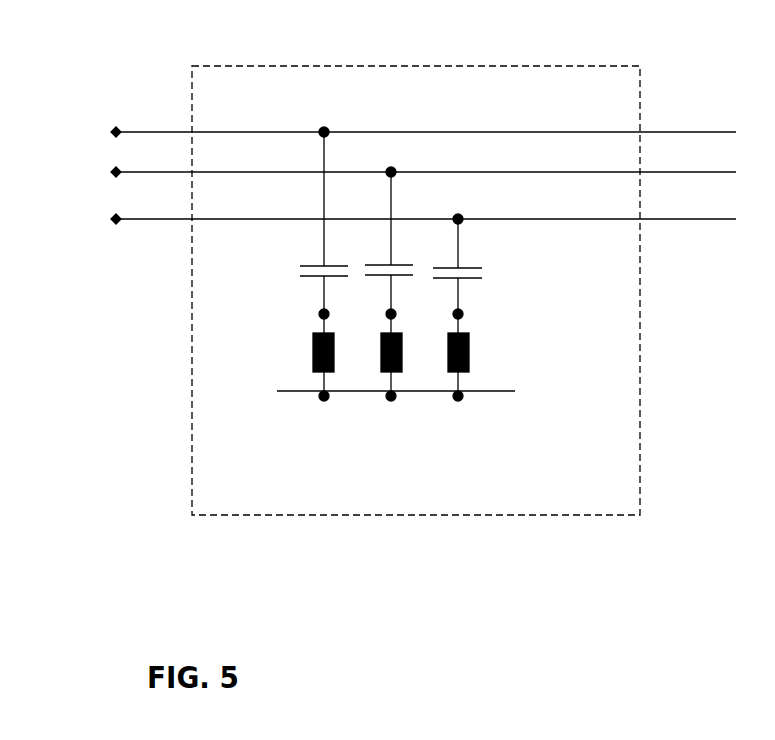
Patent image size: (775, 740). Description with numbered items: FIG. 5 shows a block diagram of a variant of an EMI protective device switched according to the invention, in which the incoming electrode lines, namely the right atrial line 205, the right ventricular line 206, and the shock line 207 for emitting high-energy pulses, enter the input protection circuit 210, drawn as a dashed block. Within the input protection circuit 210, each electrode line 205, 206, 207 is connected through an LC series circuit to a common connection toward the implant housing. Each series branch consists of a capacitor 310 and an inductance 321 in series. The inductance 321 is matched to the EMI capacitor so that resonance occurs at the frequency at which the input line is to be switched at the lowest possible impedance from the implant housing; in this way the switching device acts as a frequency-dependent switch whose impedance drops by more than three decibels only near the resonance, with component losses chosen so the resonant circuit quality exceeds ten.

The input protection circuit 210 is at (416, 266).
The right atrial electrode line 205 is at (394, 132).
The right ventricular electrode line 206 is at (394, 172).
The shock line 207 is at (394, 219).
The capacitors 310 is at (429, 223).
The inductance 321 is at (375, 355).